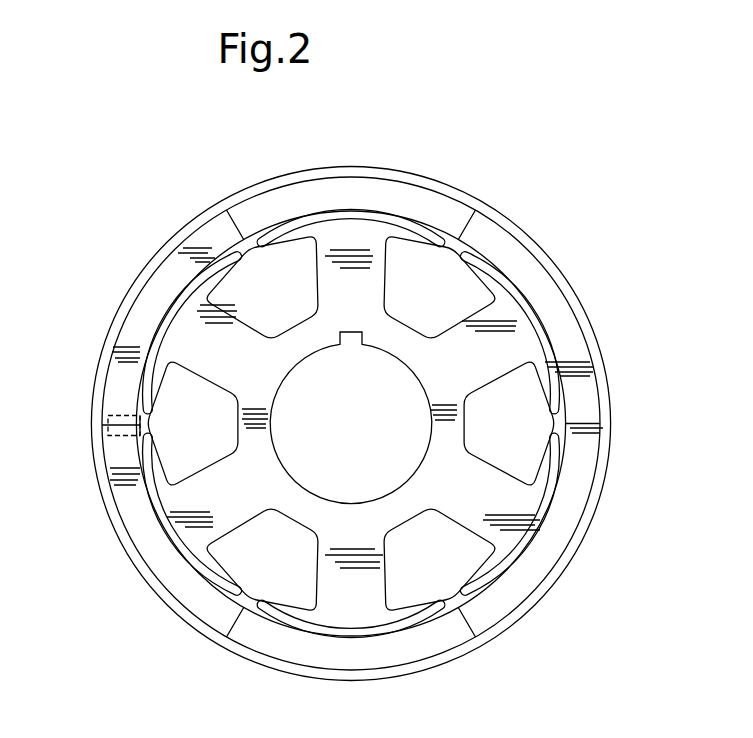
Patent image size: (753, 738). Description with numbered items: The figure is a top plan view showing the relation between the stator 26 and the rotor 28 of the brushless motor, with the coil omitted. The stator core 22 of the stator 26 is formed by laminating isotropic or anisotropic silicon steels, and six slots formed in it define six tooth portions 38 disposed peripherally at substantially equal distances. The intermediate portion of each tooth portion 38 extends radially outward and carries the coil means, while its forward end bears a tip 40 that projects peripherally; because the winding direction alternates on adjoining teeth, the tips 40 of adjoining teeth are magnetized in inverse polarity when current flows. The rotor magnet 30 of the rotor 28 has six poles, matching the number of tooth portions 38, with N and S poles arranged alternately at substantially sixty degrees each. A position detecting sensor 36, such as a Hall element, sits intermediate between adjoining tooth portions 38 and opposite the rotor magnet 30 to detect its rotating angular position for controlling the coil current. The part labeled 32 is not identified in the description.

The stator core 22 is at (423, 507).
The stator 26 is at (552, 466).
The rotor 28 is at (101, 492).
The rotor magnet 30 is at (201, 610).
The housing sleeve 32 is at (126, 291).
The position detecting sensor 36 is at (112, 414).
The tooth portion 38 is at (322, 265).
The tip 40 is at (491, 274).